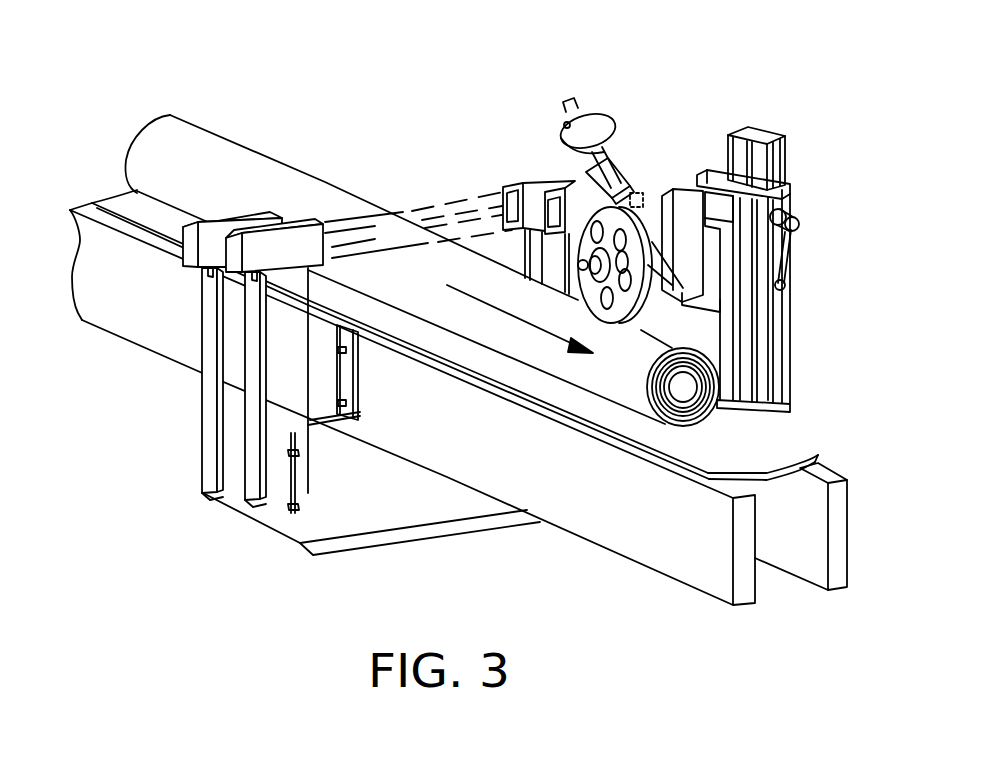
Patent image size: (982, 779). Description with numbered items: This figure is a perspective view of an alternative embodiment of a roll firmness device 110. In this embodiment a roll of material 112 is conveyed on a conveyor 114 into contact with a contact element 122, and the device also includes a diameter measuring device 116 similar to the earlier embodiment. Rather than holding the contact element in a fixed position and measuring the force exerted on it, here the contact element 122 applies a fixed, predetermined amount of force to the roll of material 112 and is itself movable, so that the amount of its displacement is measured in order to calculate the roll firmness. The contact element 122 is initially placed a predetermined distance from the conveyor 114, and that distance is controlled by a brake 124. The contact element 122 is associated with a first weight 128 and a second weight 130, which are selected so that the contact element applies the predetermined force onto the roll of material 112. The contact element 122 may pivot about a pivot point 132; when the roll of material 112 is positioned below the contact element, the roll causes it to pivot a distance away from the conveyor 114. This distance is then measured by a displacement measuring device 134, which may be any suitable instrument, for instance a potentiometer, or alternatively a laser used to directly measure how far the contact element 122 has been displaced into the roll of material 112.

The roll firmness device 110 is at (815, 132).
The roll of material 112 is at (197, 150).
The conveyor 114 is at (785, 457).
The diameter measuring device 116 is at (495, 165).
The contact element 122 is at (615, 200).
The brake 124 is at (799, 218).
The first weight 128 is at (597, 118).
The second weight 130 is at (652, 300).
The pivot point 132 is at (620, 195).
The displacement measuring device 134 is at (643, 200).